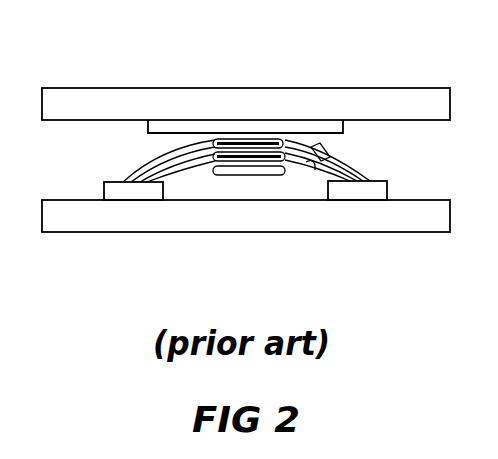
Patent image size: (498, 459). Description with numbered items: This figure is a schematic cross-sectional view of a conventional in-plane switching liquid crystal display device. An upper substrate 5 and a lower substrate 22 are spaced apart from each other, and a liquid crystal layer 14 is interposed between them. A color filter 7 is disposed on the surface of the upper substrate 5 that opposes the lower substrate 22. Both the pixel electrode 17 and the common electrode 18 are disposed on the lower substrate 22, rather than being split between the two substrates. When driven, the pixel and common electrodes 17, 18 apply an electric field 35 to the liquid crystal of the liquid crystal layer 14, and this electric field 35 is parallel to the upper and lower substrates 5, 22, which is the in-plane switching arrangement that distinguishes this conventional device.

The upper substrate 5 is at (241, 112).
The color filter 7 is at (187, 131).
The liquid crystal layer 14 is at (263, 148).
The electric field 35 is at (328, 148).
The pixel electrode 17 is at (110, 191).
The common electrode 18 is at (380, 187).
The lower substrate 22 is at (265, 224).